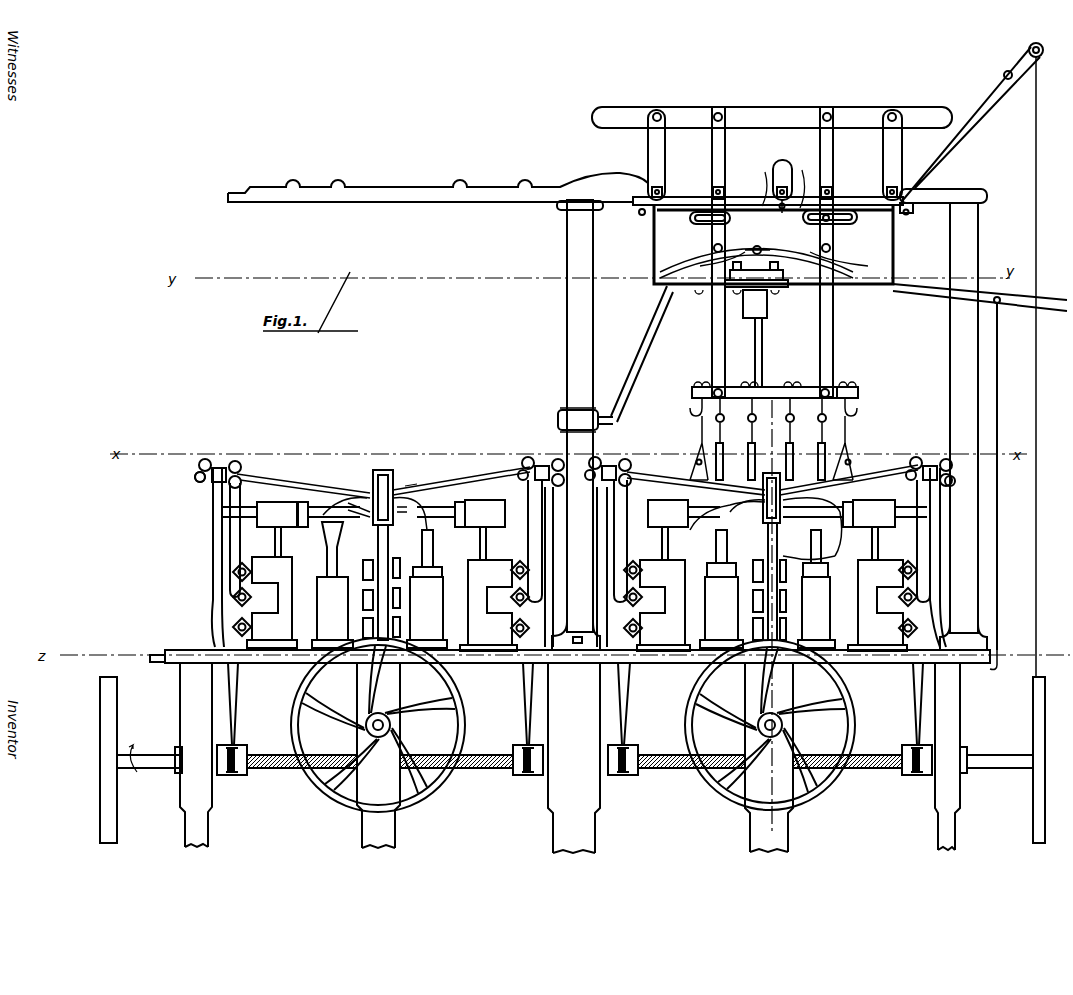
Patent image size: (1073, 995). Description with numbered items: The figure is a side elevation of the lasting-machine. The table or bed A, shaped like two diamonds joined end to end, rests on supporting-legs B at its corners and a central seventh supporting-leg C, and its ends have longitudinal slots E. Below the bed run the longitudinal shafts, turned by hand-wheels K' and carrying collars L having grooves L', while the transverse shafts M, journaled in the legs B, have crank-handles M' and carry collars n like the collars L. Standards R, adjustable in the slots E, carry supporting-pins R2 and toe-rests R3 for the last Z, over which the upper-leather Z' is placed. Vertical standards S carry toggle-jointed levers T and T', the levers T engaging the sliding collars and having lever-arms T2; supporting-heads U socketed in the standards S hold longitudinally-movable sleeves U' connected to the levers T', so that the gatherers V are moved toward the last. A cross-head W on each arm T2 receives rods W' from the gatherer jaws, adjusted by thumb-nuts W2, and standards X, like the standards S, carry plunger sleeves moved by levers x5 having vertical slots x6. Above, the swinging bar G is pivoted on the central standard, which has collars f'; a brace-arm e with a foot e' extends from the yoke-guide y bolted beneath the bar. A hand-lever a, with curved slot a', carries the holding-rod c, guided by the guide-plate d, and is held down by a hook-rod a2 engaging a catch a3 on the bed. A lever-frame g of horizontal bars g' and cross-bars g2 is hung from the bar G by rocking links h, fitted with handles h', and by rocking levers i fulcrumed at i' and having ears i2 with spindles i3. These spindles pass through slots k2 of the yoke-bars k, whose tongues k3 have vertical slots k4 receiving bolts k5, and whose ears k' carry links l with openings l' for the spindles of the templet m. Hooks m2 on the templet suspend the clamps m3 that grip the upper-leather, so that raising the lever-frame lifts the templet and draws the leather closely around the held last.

The table or bed A is at (175, 648).
The supporting-leg B is at (180, 715).
The central supporting-leg C is at (574, 758).
The longitudinal slot E is at (567, 356).
The swinging bar G is at (538, 202).
The collar L is at (574, 772).
The groove or recess L' is at (572, 749).
The transverse shaft M is at (573, 725).
The hand-wheel or crank-handle M' is at (573, 719).
The standard R is at (573, 612).
The supporting-pin R2 is at (436, 565).
The toe-rest R3 is at (326, 545).
The vertical standard S is at (577, 604).
The toggle-jointed lever T is at (575, 704).
The toggle-jointed lever T' is at (580, 558).
The lever-arm T2 is at (213, 546).
The supporting-head U is at (576, 530).
The longitudinally-movable sleeve U' is at (575, 500).
The gatherer V is at (368, 525).
The cross-head W is at (573, 460).
The rod W' is at (577, 479).
The thumb-nut W2 is at (945, 463).
The standard X is at (370, 560).
The last Z is at (818, 552).
The upper-leather Z' is at (786, 527).
The hand-lever a is at (980, 300).
The curved slot a' is at (751, 286).
The hook-rod a2 is at (1003, 565).
The catch a3 is at (996, 672).
The holding rod or bar c is at (762, 340).
The guide-plate d is at (774, 292).
The brace-arm e is at (654, 354).
The horizontal foot e' is at (572, 420).
The collar f' is at (551, 418).
The lever-frame g is at (772, 104).
The horizontal bar g' is at (777, 118).
The connecting-rod or cross-bar g2 is at (660, 114).
The rocking link h is at (803, 162).
The handle or lever h' is at (973, 360).
The rocking lever i is at (772, 153).
The fulcrum i' is at (771, 179).
The depending ear i2 is at (772, 220).
The spindle i3 is at (712, 248).
The yoke-bar k is at (575, 512).
The hand-wheel or crank K' is at (571, 760).
The depending ear k' is at (775, 260).
The horizontal slot k2 is at (290, 770).
The tongue or arm k3 is at (476, 768).
The vertical slot k4 is at (765, 212).
The bolt k5 is at (807, 217).
The depending rod or link l is at (766, 298).
The transverse opening l' is at (771, 378).
The templet m is at (858, 394).
The hook m2 is at (698, 400).
The clamp m3 is at (696, 452).
The collar n is at (771, 622).
The toggle-jointed lever x5 is at (413, 485).
The vertical slot x6 is at (383, 470).
The yoke-guide y is at (893, 248).